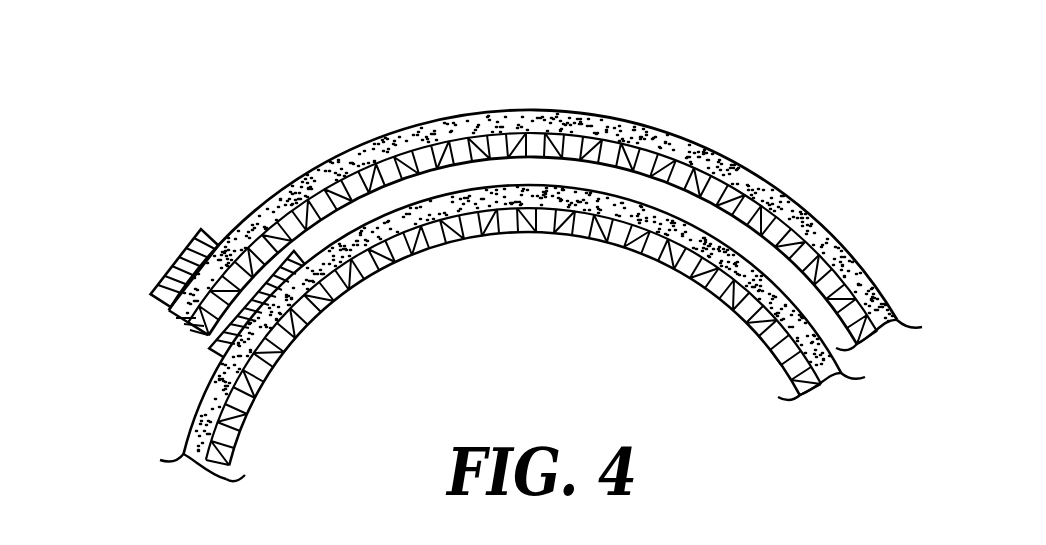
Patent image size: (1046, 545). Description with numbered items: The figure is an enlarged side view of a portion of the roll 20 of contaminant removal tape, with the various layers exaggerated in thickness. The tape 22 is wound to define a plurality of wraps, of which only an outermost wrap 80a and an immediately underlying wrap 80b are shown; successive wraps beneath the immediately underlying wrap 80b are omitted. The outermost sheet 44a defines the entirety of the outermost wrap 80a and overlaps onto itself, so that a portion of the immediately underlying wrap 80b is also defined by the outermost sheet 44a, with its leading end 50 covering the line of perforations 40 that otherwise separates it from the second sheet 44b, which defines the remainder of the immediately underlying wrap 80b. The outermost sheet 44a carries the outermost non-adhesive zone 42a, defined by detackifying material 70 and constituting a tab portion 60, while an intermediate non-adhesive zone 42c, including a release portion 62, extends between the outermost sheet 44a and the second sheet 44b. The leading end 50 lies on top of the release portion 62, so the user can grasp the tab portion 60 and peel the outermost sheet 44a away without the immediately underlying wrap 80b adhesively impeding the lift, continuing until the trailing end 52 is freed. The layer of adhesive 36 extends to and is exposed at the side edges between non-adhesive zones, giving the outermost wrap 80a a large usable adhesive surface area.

The roll 20 is at (392, 65).
The tape 22 is at (684, 99).
The layer of adhesive 36 is at (792, 197).
The lines of perforations 40 is at (256, 318).
The outermost non-adhesive zone 42a is at (150, 242).
The intermediate non-adhesive zone 42c is at (163, 375).
The outermost sheet 44a is at (268, 186).
The second sheet 44b is at (713, 305).
The leading end 50 is at (192, 311).
The trailing end 52 is at (252, 348).
The tab portion 60 is at (186, 233).
The release portion 62 is at (228, 368).
The detackifying material 70 is at (150, 272).
The outermost wrap 80a is at (546, 99).
The immediately underlying wrap 80b is at (400, 271).